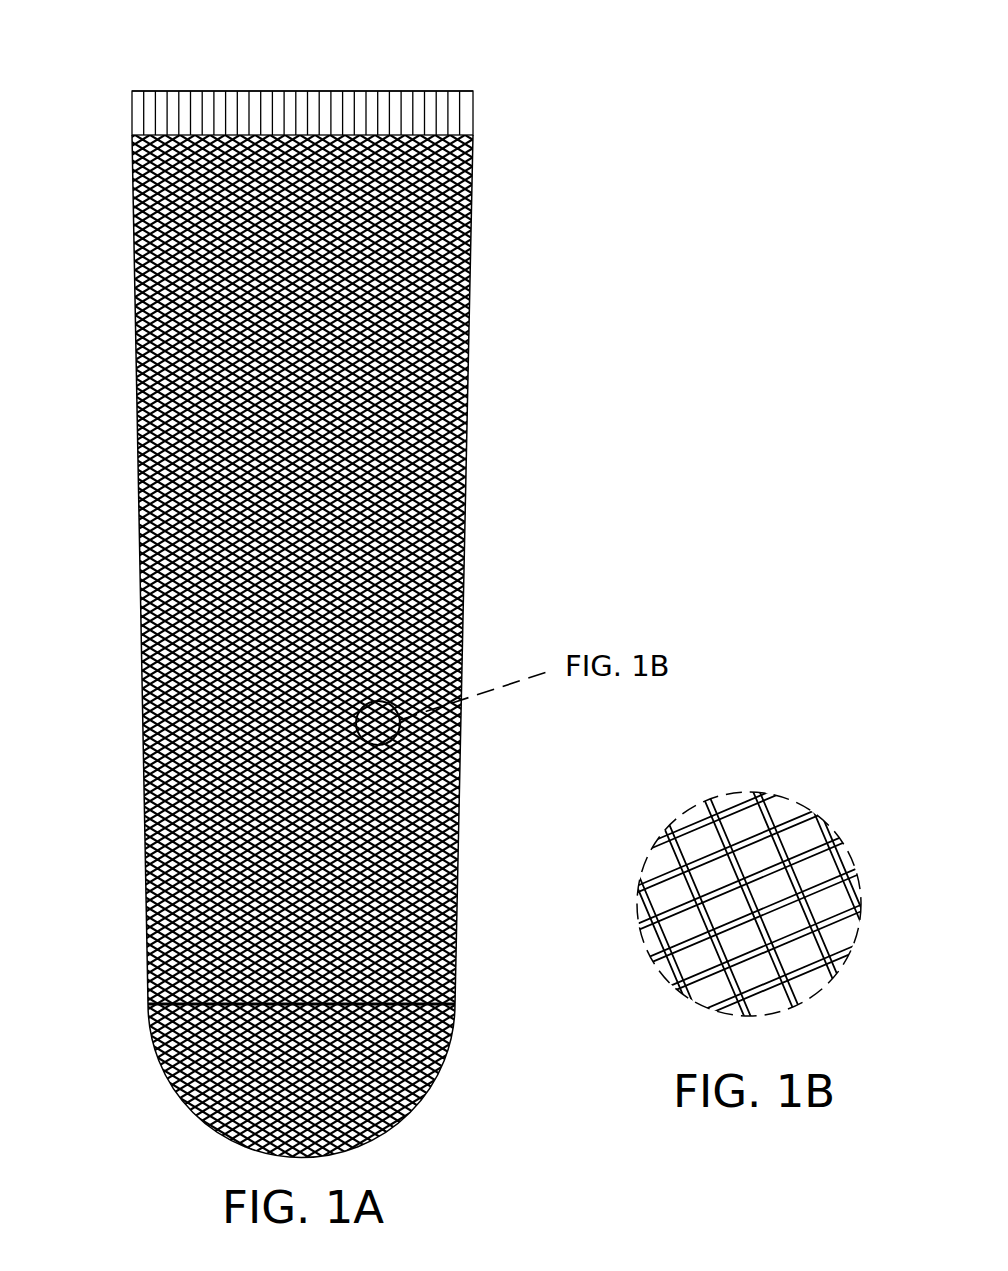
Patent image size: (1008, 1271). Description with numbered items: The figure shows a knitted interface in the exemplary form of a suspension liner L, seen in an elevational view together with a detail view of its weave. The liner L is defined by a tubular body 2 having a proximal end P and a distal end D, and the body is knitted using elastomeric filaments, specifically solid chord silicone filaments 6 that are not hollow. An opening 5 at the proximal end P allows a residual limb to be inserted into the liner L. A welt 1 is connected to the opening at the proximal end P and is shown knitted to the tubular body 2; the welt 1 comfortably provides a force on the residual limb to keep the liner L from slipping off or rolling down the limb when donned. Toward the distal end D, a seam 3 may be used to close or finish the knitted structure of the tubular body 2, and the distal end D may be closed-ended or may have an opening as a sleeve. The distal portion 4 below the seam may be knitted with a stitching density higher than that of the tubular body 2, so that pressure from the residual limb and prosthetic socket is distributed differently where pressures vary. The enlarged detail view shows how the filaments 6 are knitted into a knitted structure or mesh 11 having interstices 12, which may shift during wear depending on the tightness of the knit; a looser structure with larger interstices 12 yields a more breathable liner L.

In FIG. 1A, the welt 1 is at (162, 117).
In FIG. 1A, the tubular body 2 is at (497, 1003).
In FIG. 1A, the seam 3 is at (173, 1006).
In FIG. 1A, the distal portion 4 is at (207, 1127).
In FIG. 1A, the opening 5 is at (392, 80).
In FIG. 1B, the solid chord silicone filaments 6 is at (833, 932).
In FIG. 1B, the mesh 11 is at (834, 826).
In FIG. 1B, the interstices 12 is at (778, 838).
In FIG. 1A, the proximal end P is at (515, 77).
In FIG. 1A, the suspension liner L is at (126, 507).
In FIG. 1A, the distal end D is at (448, 1117).